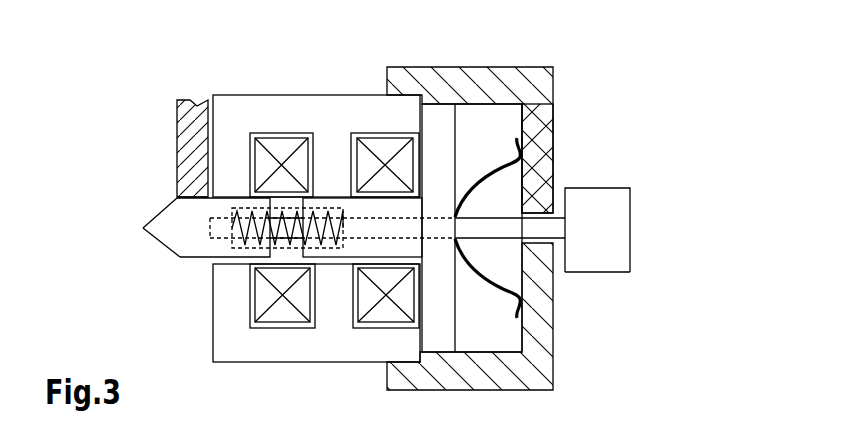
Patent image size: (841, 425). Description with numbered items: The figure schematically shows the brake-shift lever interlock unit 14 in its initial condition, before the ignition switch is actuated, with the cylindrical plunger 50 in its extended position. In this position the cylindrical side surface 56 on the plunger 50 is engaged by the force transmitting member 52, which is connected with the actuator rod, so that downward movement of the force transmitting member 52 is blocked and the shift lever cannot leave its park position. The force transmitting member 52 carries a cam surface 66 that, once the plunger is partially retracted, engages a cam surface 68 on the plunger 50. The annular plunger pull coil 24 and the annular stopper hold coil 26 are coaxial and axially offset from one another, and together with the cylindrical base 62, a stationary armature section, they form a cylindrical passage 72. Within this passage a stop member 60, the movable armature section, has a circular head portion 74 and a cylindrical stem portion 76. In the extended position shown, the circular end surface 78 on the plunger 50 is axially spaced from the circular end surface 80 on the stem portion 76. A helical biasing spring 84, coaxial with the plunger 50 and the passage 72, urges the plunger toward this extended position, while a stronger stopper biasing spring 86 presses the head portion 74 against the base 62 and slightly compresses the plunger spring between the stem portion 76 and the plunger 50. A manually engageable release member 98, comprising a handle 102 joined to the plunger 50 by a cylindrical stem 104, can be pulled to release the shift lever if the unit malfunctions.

The brake-shift lever interlock unit 14 is at (538, 53).
The plunger pull coil 24 is at (283, 150).
The stopper hold coil 26 is at (385, 149).
The plunger 50 is at (187, 259).
The force transmitting member 52 is at (180, 135).
The cylindrical side surface 56 is at (198, 200).
The stop member 60 is at (459, 324).
The base 62 is at (246, 350).
The cam surface 66 is at (202, 187).
The cam surface 68 is at (160, 212).
The cylindrical passage 72 is at (236, 264).
The head portion 74 is at (437, 128).
The stem portion 76 is at (357, 245).
The end surface 78 is at (262, 200).
The end surface 80 is at (303, 257).
The biasing spring 84 is at (285, 220).
The stopper biasing spring 86 is at (525, 165).
The manually engageable release member 98 is at (605, 274).
The handle 102 is at (606, 216).
The cylindrical stem 104 is at (495, 228).